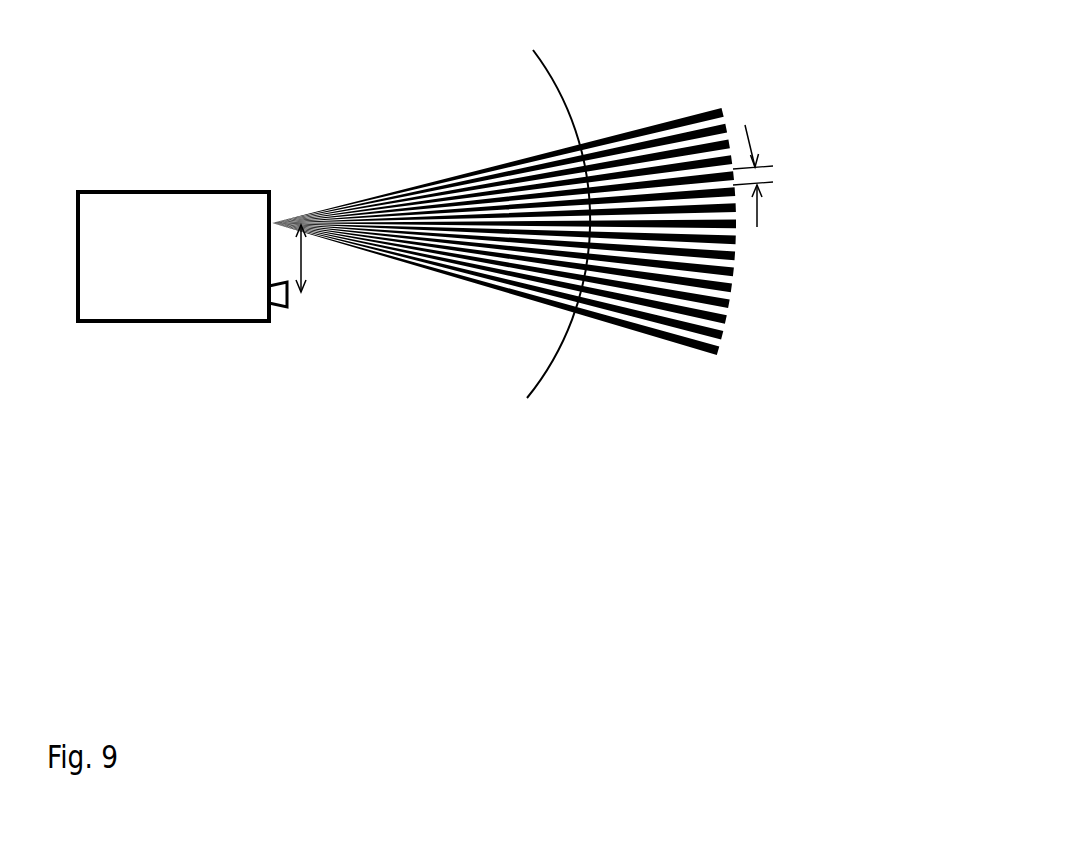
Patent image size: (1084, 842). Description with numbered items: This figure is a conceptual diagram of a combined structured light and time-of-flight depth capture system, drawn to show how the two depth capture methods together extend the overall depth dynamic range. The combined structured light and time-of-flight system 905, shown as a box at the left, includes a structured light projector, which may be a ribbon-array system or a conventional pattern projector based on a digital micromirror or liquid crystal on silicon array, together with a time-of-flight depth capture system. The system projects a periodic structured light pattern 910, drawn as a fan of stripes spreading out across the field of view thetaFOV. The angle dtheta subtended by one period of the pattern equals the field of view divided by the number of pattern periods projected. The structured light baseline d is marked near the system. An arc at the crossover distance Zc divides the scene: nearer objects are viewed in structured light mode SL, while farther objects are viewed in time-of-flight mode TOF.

The combined structured light and time-of-flight system 905 is at (153, 192).
The structured light pattern 910 is at (504, 231).
The structured light baseline d is at (305, 257).
The structured light mode SL is at (402, 328).
The crossover distance Zc is at (544, 249).
The time-of-flight mode TOF is at (667, 345).
The field of view thetaFOV is at (670, 115).
The angle subtended by one pattern period dtheta is at (780, 176).